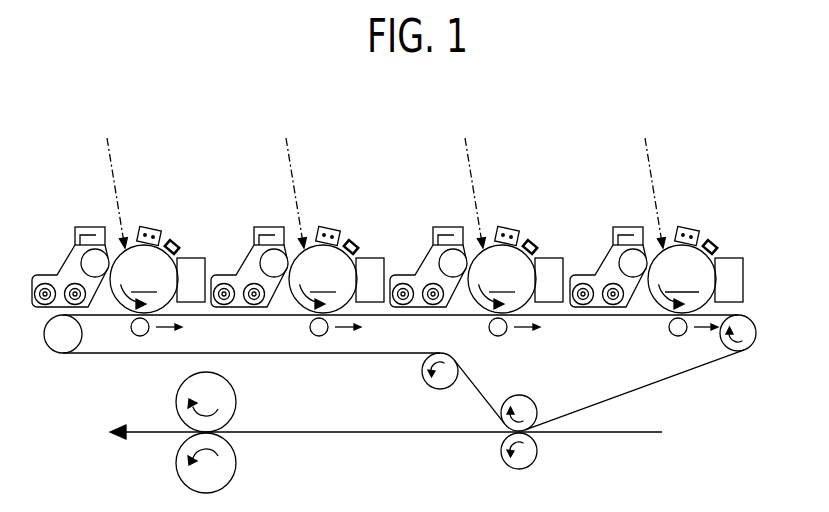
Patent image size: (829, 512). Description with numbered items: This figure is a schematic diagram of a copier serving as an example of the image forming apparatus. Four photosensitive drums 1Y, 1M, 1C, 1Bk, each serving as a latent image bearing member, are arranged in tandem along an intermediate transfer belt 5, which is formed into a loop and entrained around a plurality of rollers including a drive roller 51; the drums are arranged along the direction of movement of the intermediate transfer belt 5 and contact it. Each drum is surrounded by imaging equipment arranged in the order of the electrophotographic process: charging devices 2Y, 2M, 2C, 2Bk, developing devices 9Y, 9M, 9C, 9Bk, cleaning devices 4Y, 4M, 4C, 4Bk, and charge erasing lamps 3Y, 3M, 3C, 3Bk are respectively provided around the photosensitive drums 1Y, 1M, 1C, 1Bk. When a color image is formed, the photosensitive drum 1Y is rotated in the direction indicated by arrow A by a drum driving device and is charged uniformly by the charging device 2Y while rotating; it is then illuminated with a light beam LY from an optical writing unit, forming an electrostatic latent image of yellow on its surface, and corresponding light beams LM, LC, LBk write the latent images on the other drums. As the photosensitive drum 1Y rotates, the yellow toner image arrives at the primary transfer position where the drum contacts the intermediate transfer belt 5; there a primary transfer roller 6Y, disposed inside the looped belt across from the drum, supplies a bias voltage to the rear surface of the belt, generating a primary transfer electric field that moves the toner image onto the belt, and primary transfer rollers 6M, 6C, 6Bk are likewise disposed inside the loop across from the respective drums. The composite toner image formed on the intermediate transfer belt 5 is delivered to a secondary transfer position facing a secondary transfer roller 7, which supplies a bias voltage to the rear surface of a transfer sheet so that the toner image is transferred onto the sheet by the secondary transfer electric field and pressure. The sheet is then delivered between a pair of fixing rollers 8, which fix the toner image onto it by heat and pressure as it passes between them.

The photosensitive drum 1Y is at (144, 279).
The photosensitive drum 1M is at (323, 279).
The photosensitive drum 1C is at (502, 279).
The photosensitive drum 1Bk is at (682, 279).
The charging device 2Y is at (148, 227).
The charging device 2M is at (327, 227).
The charging device 2C is at (506, 227).
The charging device 2Bk is at (686, 227).
The charge erasing lamp 3Y is at (175, 240).
The charge erasing lamp 3M is at (354, 240).
The charge erasing lamp 3C is at (533, 240).
The charge erasing lamp 3Bk is at (713, 240).
The cleaning device 4Y is at (180, 258).
The cleaning device 4M is at (359, 258).
The cleaning device 4C is at (538, 258).
The cleaning device 4Bk is at (718, 258).
The intermediate transfer belt 5 is at (682, 373).
The drive roller 51 is at (756, 331).
The primary transfer roller 6Y is at (149, 331).
The primary transfer roller 6M is at (311, 329).
The primary transfer roller 6C is at (490, 329).
The primary transfer roller 6Bk is at (670, 329).
The secondary transfer roller 7 is at (537, 452).
The fixing rollers 8 is at (238, 481).
The developing device 9Y is at (92, 227).
The developing device 9M is at (271, 227).
The developing device 9C is at (450, 227).
The developing device 9Bk is at (630, 227).
The light beam LY is at (112, 181).
The light beam LM is at (291, 181).
The light beam LC is at (470, 181).
The light beam LBk is at (649, 181).
The rotation direction arrow A is at (118, 306).